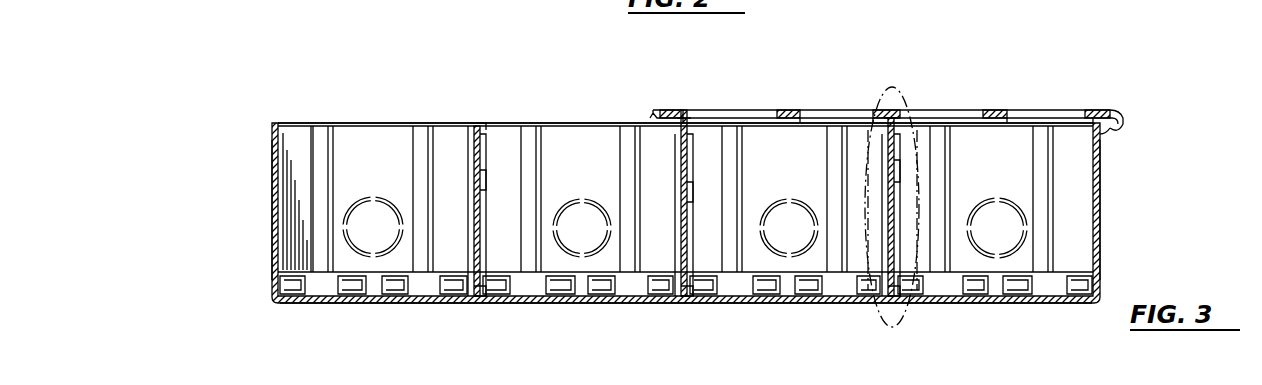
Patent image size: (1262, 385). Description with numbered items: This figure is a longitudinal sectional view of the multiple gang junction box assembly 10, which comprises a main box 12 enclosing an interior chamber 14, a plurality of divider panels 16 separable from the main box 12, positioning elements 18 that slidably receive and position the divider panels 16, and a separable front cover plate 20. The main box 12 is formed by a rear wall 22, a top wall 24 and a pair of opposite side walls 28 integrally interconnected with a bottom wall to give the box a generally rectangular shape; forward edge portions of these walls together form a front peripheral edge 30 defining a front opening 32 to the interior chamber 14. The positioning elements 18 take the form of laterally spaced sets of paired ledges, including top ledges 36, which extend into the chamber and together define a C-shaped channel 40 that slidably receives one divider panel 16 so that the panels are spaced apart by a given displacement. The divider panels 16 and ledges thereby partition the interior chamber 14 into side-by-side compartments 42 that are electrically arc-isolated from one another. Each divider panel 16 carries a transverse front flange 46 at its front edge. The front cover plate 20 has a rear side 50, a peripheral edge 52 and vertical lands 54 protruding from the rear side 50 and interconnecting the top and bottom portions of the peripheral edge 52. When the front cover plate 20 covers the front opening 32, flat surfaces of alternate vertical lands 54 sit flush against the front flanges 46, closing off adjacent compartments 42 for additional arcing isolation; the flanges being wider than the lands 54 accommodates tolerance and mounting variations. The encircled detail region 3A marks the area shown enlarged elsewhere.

The multiple gang junction box assembly 10 is at (384, 88).
The main box 12 is at (270, 171).
The interior chamber 14 is at (612, 134).
The divider panel 16 is at (488, 202).
The positioning element 18 is at (486, 148).
The front cover plate 20 is at (1098, 110).
The rear wall 22 is at (376, 303).
The top wall 24 is at (388, 126).
The side wall 28 is at (273, 221).
The front peripheral edge 30 is at (567, 125).
The front opening 32 is at (346, 124).
The top ledge 36 is at (490, 250).
The C-shaped channel 40 is at (481, 186).
The compartment 42 is at (343, 254).
The front flange 46 is at (475, 126).
The rear side 50 is at (752, 118).
The peripheral edge 52 is at (1124, 122).
The vertical land 54 is at (670, 118).
The detail region 3A is at (882, 90).